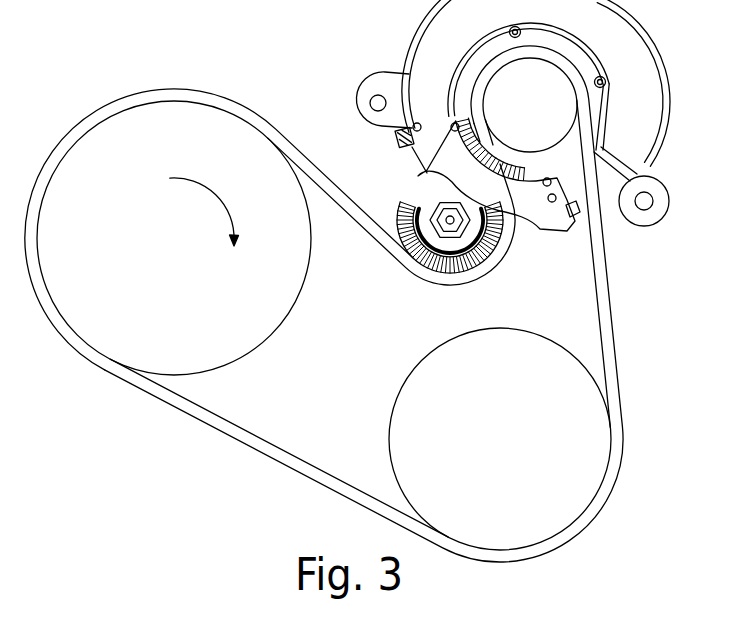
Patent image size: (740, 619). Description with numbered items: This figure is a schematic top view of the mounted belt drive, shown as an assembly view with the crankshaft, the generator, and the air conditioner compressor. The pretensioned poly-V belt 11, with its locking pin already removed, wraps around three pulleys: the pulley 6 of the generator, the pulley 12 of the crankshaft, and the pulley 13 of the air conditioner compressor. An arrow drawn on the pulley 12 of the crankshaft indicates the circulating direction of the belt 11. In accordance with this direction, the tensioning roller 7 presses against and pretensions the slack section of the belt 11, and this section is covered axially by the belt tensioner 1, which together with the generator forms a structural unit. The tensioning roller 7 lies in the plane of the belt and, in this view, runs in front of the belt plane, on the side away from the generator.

The belt tensioner 1 is at (533, 246).
The pulley of the generator 6 is at (539, 121).
The tensioning roller 7 is at (397, 184).
The poly-V belt 11 is at (611, 317).
The pulley of the crankshaft 12 is at (297, 297).
The pulley of the air conditioner compressor 13 is at (517, 466).